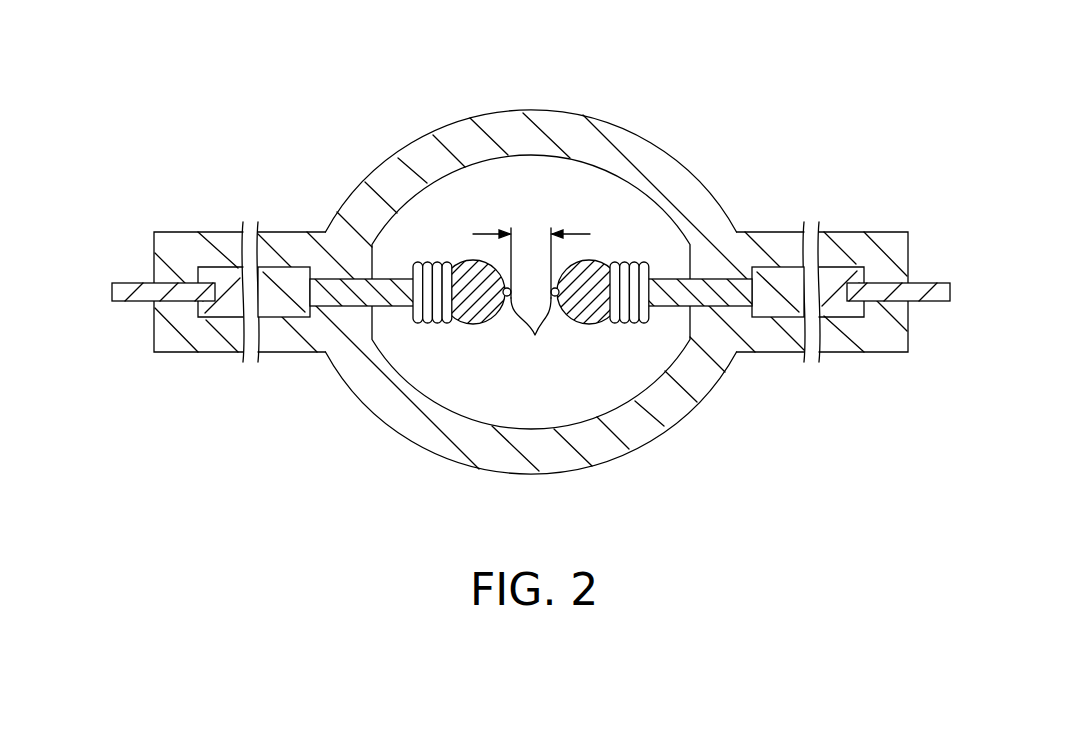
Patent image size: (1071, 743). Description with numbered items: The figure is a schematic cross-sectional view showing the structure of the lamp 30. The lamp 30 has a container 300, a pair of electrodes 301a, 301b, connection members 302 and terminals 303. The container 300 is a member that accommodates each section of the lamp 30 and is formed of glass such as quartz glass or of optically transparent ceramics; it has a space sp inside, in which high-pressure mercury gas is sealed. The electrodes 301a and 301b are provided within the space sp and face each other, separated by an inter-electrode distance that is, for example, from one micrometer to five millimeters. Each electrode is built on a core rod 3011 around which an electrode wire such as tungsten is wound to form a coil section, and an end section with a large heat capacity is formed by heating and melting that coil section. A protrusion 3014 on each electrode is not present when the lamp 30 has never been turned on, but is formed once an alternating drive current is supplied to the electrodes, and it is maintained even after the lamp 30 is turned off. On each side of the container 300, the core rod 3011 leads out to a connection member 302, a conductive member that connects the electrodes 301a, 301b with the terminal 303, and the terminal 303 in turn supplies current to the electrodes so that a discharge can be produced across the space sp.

The lamp 30 is at (530, 281).
The container 300 is at (407, 152).
The space sp is at (563, 178).
The electrode 301a is at (428, 296).
The electrode 301b is at (634, 296).
The core rod 3011 is at (323, 312).
The connection member 302 is at (292, 266).
The terminal 303 is at (128, 283).
The protrusion 3014 is at (535, 335).